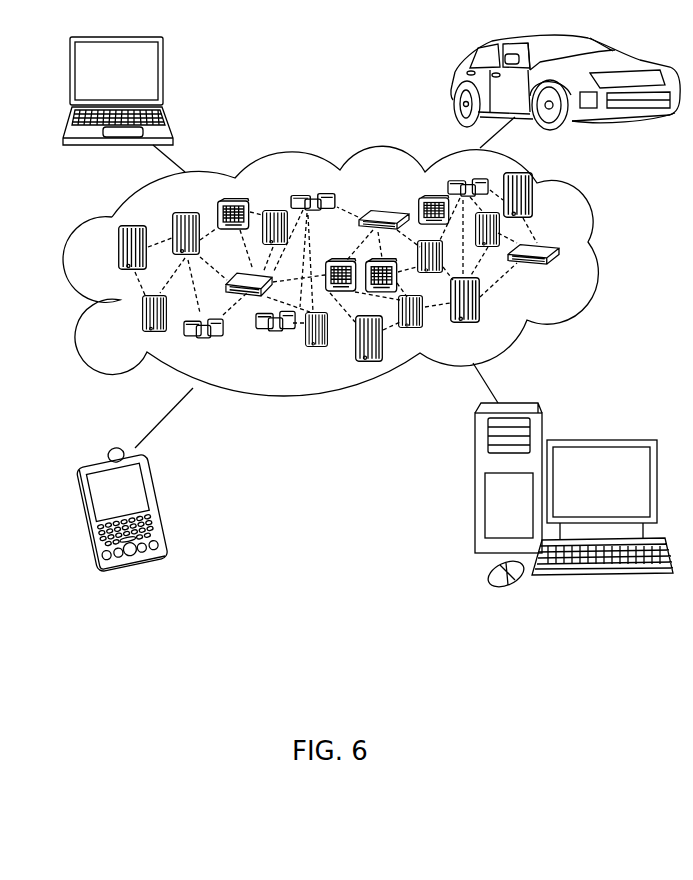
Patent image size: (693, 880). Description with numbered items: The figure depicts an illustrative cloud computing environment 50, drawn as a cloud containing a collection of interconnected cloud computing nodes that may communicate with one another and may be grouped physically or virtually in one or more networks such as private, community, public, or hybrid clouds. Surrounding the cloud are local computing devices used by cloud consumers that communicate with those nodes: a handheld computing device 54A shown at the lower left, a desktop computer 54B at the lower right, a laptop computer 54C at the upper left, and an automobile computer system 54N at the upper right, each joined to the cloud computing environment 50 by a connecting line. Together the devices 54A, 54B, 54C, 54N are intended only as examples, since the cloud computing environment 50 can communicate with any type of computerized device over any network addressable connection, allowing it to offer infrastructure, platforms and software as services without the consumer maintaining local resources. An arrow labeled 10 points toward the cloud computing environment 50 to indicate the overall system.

The system 10 is at (558, 271).
The cloud computing environment 50 is at (602, 248).
The computing device 54A is at (162, 508).
The desktop computer 54B is at (602, 438).
The laptop computer 54C is at (165, 77).
The automobile computer system 54N is at (452, 86).